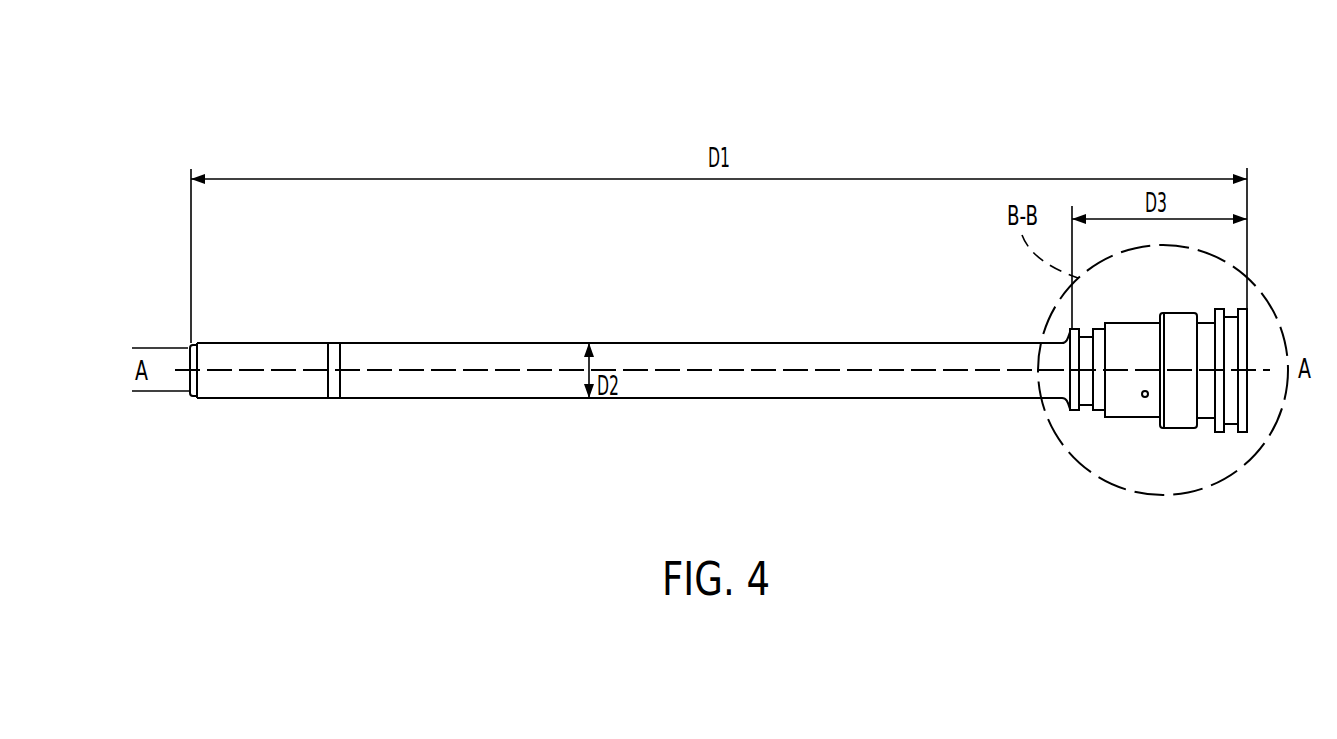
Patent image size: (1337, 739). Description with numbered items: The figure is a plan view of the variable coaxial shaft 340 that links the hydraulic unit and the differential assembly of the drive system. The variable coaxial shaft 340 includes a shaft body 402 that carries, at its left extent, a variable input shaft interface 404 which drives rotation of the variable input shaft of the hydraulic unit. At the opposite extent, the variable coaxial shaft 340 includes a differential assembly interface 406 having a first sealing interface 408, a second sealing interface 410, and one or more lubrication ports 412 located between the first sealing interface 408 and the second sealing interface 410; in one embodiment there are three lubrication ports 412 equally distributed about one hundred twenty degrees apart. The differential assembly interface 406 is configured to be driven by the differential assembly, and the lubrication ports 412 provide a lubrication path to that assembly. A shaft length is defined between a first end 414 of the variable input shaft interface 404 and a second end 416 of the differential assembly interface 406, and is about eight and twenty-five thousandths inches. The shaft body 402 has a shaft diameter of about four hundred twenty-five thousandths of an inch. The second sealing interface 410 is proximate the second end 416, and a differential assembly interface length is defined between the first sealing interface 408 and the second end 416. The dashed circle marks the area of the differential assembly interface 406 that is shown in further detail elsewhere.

The variable coaxial shaft 340 is at (801, 98).
The shaft body 402 is at (718, 342).
The variable input shaft interface 404 is at (298, 399).
The differential assembly interface 406 is at (1178, 313).
The first sealing interface 408 is at (1088, 408).
The second sealing interface 410 is at (1230, 428).
The lubrication port 412 is at (1145, 397).
The first end 414 is at (188, 392).
The second end 416 is at (1248, 426).